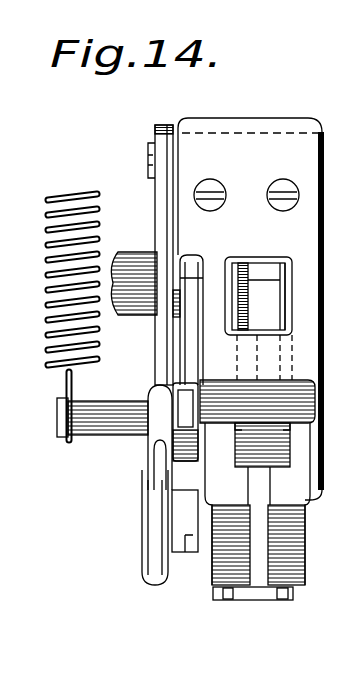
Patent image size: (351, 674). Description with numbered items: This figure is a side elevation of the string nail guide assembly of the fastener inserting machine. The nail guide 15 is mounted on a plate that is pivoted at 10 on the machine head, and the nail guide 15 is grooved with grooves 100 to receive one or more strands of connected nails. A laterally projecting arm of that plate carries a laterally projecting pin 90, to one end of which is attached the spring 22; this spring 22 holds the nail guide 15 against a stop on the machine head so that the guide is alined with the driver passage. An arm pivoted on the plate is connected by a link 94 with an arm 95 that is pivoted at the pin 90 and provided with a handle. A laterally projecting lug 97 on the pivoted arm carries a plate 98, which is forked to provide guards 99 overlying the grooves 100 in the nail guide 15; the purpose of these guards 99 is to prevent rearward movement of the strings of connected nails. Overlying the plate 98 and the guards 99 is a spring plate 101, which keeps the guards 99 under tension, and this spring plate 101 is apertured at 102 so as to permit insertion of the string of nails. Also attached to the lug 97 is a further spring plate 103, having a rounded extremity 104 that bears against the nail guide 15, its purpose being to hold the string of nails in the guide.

The laterally projecting lug 97 is at (198, 131).
The link 94 is at (160, 205).
The pivot 10 is at (124, 252).
The spring 22 is at (58, 193).
The laterally projecting pin 90 is at (58, 430).
The arm 95 is at (158, 472).
The aperture 102 is at (225, 317).
The spring plate 103 is at (267, 290).
The plate 98 is at (233, 278).
The spring plate 101 is at (210, 357).
The rounded extremity 104 is at (252, 458).
The guards 99 is at (247, 562).
The nail guide 15 is at (257, 589).
The grooves 100 is at (222, 600).